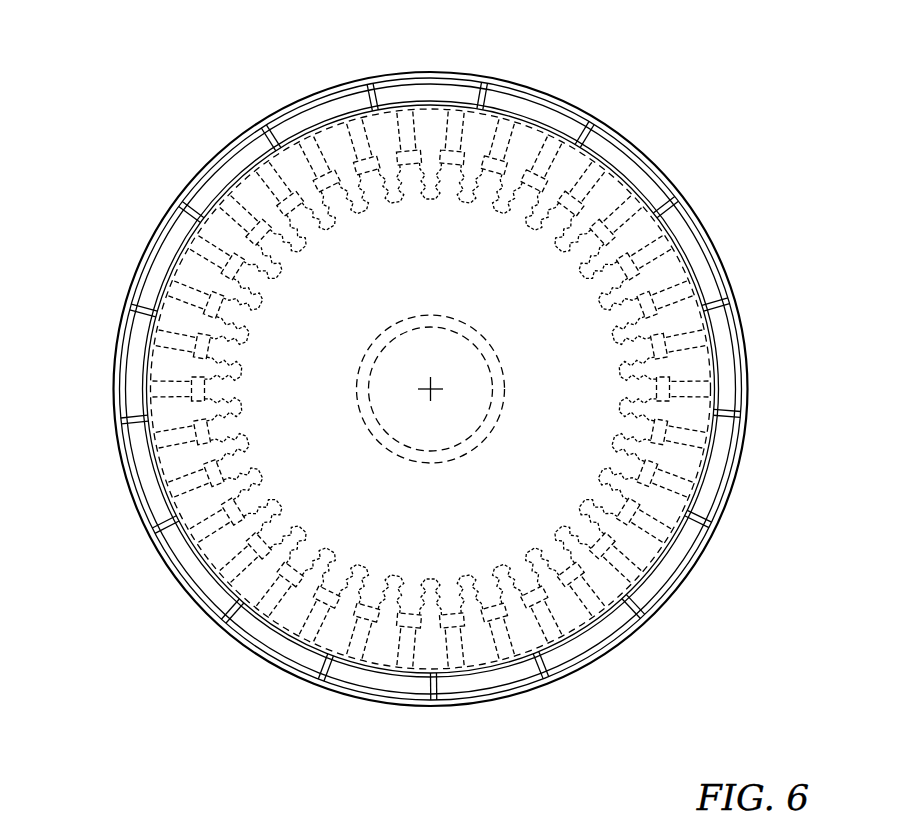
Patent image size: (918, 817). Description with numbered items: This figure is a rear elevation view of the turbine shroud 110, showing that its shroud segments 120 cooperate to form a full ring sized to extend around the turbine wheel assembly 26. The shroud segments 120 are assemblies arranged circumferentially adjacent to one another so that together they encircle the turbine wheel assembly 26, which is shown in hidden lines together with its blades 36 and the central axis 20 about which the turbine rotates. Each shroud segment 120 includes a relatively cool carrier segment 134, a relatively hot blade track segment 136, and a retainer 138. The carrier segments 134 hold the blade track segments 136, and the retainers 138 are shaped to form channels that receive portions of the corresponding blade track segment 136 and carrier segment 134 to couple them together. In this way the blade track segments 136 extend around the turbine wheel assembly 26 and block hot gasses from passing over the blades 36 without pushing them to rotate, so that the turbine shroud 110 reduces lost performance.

The turbine shroud 110 is at (714, 84).
The shroud segment 120 is at (324, 92).
The carrier segment 134 is at (356, 78).
The blade track segment 136 is at (281, 148).
The retainer 138 is at (334, 110).
The turbine wheel assembly 26 is at (551, 167).
The blades 36 is at (624, 216).
The axis 20 is at (432, 385).